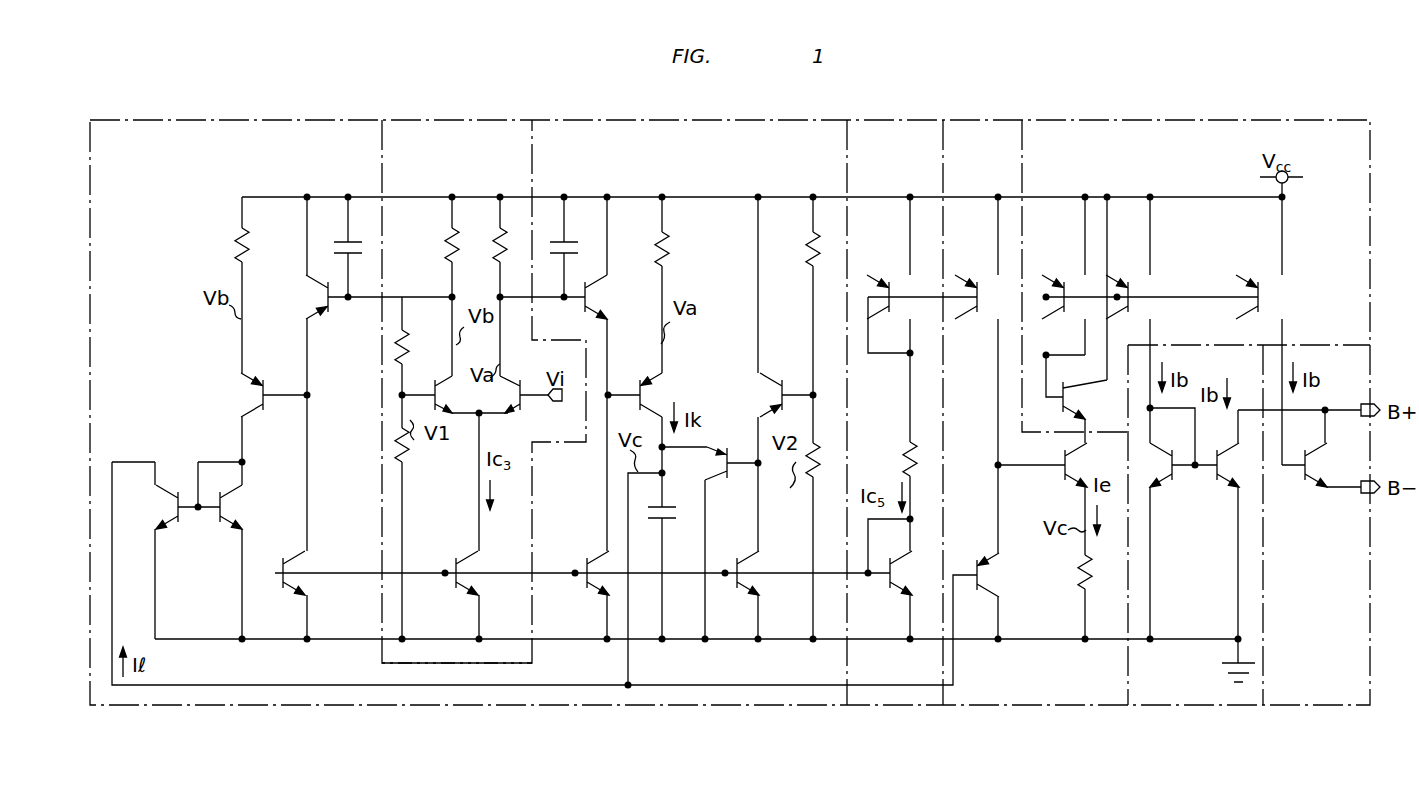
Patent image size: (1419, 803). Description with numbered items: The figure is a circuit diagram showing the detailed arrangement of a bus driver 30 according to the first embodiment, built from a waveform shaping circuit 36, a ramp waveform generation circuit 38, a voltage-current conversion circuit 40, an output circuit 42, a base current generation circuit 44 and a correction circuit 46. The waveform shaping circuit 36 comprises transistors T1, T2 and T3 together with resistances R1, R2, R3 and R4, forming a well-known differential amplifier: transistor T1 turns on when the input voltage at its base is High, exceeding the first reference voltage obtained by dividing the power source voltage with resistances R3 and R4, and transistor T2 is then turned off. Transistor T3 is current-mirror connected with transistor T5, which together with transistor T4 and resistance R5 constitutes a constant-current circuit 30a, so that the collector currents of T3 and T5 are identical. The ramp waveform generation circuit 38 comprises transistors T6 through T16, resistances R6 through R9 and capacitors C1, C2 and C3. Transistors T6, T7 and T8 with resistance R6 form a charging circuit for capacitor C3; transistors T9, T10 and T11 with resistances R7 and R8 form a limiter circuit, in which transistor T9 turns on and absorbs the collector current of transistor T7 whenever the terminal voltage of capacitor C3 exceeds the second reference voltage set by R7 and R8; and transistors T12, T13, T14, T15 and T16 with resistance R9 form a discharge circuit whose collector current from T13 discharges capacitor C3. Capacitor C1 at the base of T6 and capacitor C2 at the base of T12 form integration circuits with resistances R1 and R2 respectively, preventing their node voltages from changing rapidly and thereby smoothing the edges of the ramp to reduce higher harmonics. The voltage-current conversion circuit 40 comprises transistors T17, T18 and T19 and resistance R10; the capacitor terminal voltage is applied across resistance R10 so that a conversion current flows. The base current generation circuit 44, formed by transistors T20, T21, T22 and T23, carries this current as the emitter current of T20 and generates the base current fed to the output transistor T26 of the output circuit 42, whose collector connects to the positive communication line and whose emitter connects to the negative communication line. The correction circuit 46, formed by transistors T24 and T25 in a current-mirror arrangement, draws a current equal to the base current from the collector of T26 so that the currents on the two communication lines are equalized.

The bus driver 30 is at (1172, 122).
The constant-current circuit 30a is at (904, 130).
The waveform shaping circuit 36 is at (482, 126).
The ramp waveform generation circuit 38 is at (442, 695).
The voltage-current conversion circuit 40 is at (980, 696).
The output circuit 42 is at (1286, 696).
The base current generation circuit 44 is at (1311, 127).
The correction circuit 46 is at (1156, 696).
The transistor T1 is at (519, 382).
The transistor T2 is at (438, 382).
The transistor T3 is at (478, 571).
The transistor T4 is at (877, 285).
The transistor T5 is at (884, 590).
The transistor T6 is at (598, 299).
The transistor T7 is at (660, 394).
The transistor T8 is at (602, 561).
The transistor T9 is at (730, 446).
The transistor T10 is at (780, 380).
The transistor T11 is at (756, 571).
The transistor T12 is at (324, 301).
The transistor T13 is at (271, 391).
The transistor T14 is at (305, 556).
The transistor T15 is at (238, 507).
The transistor T16 is at (178, 485).
The transistor T17 is at (992, 587).
The transistor T18 is at (1060, 473).
The transistor T19 is at (963, 285).
The transistor T20 is at (1078, 402).
The transistor T21 is at (1054, 285).
The transistor T22 is at (1247, 285).
The transistor T23 is at (1121, 285).
The transistor T24 is at (1165, 488).
The transistor T25 is at (1212, 488).
The bipolar transistor T26 is at (1302, 490).
The resistance R1 is at (508, 225).
The resistance R2 is at (446, 249).
The resistance R3 is at (410, 346).
The resistance R4 is at (412, 455).
The resistance R5 is at (898, 458).
The resistance R6 is at (670, 250).
The resistance R7 is at (804, 258).
The resistance R8 is at (808, 470).
The resistance R9 is at (253, 248).
The resistance R10 is at (1075, 580).
The capacitor C1 is at (585, 246).
The capacitor C2 is at (330, 246).
The capacitor C3 is at (676, 514).